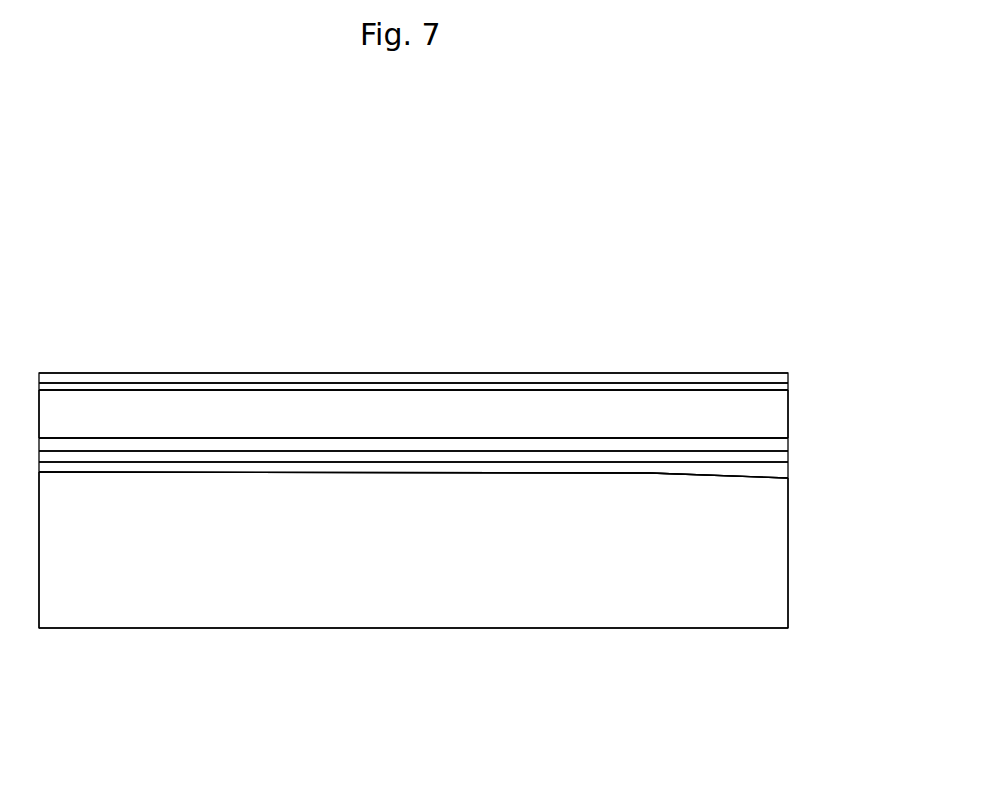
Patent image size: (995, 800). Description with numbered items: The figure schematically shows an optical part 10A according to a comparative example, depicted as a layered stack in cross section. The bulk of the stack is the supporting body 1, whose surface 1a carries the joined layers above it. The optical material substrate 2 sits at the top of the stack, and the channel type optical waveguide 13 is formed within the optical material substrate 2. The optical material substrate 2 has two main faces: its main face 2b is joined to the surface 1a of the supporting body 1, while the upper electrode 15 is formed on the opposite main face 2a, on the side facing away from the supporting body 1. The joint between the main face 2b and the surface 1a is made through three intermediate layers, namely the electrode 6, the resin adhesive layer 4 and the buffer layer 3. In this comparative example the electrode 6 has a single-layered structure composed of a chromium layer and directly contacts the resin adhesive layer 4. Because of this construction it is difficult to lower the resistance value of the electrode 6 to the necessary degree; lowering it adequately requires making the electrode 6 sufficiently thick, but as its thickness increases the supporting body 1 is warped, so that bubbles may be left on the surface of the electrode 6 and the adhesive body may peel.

The optical part 10A is at (792, 345).
The supporting body 1 is at (782, 571).
The surface of the supporting body 1a is at (512, 471).
The optical material substrate 2 is at (782, 407).
The main face of the optical material substrate 2a is at (672, 387).
The main face of the optical material substrate 2b is at (648, 440).
The buffer layer 3 is at (783, 448).
The resin adhesive layer 4 is at (783, 461).
The electrode 6 is at (421, 468).
The channel type optical waveguide 13 is at (458, 391).
The upper electrode 15 is at (310, 373).